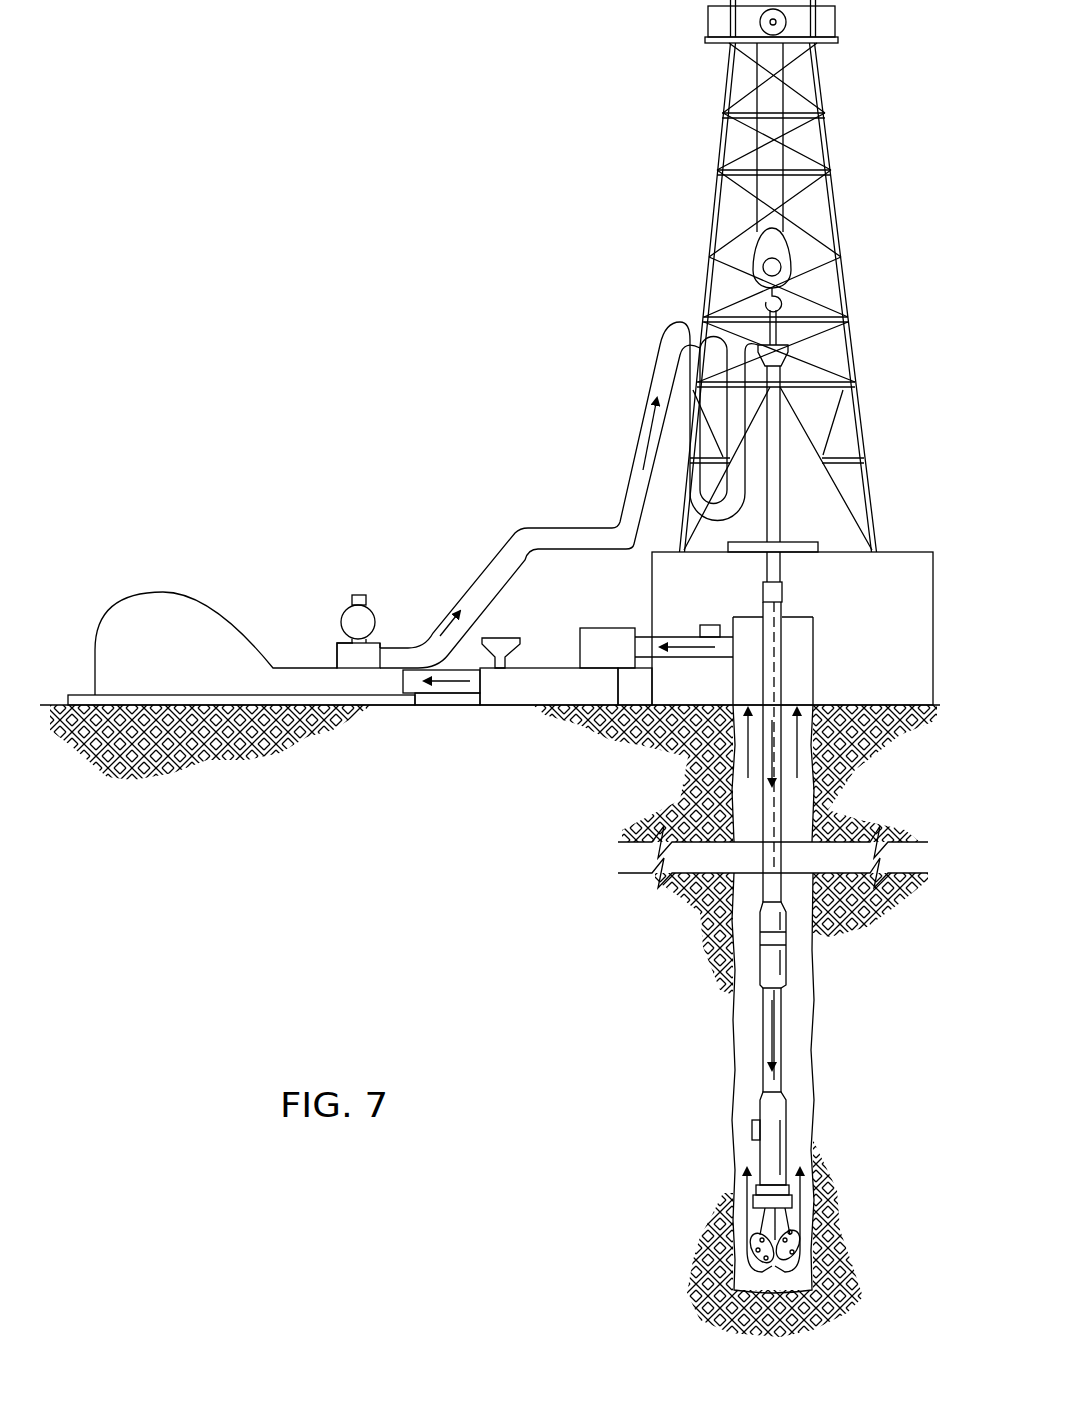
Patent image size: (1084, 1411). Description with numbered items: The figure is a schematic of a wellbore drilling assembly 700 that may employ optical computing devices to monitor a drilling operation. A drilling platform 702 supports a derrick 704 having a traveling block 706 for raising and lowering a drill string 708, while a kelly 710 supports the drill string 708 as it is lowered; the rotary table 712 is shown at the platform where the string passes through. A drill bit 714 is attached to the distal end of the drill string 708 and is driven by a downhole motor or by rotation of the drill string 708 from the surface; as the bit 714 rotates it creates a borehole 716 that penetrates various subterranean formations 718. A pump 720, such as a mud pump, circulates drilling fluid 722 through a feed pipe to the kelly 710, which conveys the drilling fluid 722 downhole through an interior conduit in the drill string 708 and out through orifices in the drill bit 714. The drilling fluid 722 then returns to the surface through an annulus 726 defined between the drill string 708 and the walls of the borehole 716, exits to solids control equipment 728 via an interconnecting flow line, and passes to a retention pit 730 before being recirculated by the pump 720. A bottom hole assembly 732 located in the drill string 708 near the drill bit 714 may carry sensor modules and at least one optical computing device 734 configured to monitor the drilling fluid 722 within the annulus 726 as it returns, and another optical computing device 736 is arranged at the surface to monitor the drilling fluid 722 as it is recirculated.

The wellbore drilling assembly 700 is at (568, 528).
The drilling platform 702 is at (906, 552).
The derrick 704 is at (832, 138).
The traveling block 706 is at (790, 254).
The drill string 708 is at (773, 818).
The kelly 710 is at (782, 440).
The rotary table 712 is at (800, 556).
The drill bit 714 is at (790, 1232).
The borehole 716 is at (806, 955).
The subterranean formations 718 is at (663, 998).
The pump 720 is at (182, 655).
The drilling fluid 722 is at (405, 655).
The annulus 726 is at (805, 1037).
The solids control equipment 728 is at (608, 628).
The retention pit 730 is at (540, 668).
The bottom hole assembly 732 is at (775, 1113).
The optical computing device 734 is at (752, 1130).
The optical computing device 736 is at (705, 625).